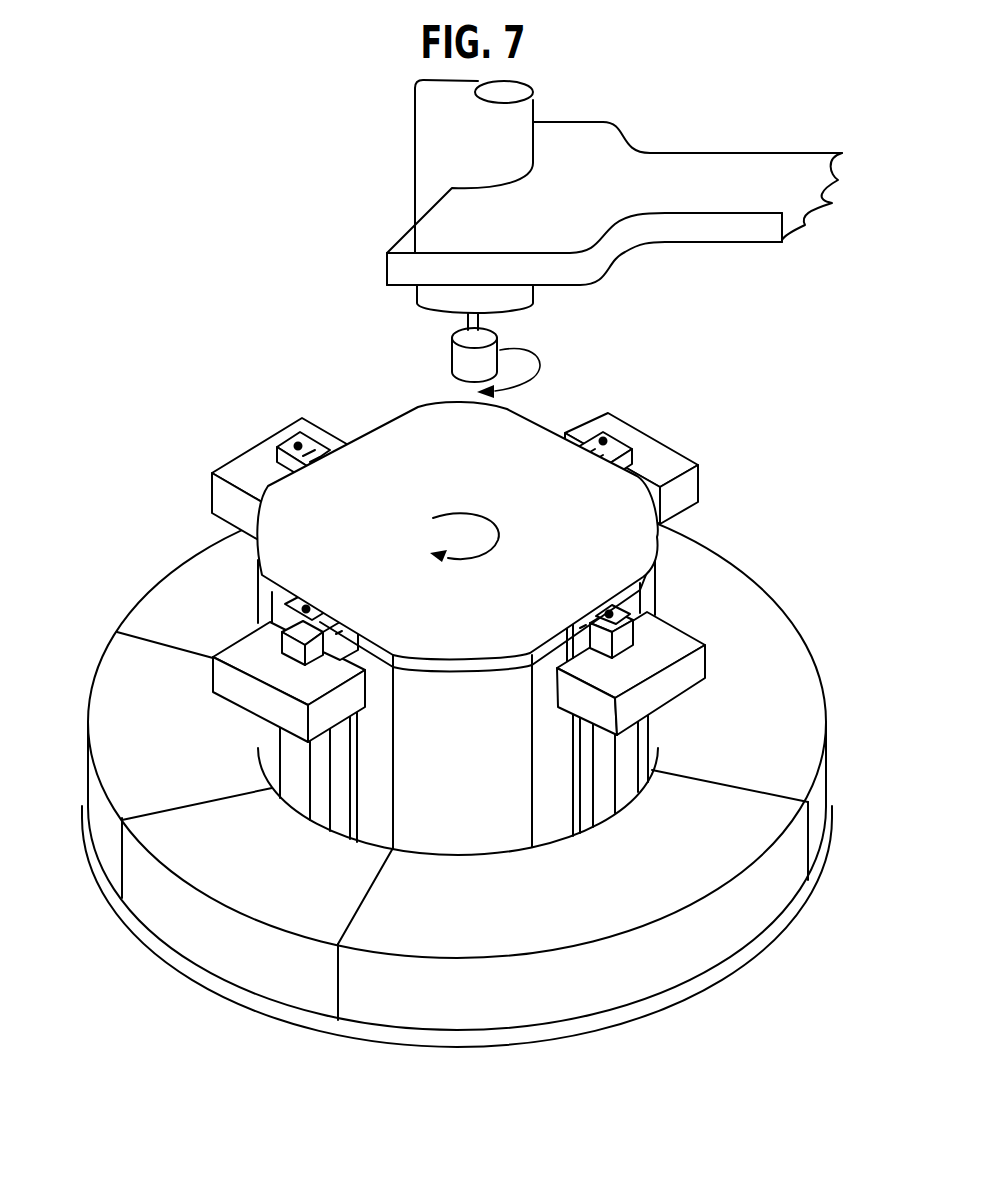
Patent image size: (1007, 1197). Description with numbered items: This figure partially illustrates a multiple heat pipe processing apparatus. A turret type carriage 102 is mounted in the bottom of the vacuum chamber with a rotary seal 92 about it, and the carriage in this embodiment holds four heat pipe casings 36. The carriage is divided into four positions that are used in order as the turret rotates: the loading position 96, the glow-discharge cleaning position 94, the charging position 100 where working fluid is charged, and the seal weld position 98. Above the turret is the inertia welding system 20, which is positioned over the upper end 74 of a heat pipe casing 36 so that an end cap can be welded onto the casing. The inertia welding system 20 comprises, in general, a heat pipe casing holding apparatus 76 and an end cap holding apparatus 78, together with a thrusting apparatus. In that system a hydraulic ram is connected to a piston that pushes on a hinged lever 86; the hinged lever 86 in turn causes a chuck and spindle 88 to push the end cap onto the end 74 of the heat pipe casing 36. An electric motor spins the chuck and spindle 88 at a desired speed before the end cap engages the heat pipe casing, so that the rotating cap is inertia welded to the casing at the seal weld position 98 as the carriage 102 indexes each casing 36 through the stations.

The inertia welding system 20 is at (597, 220).
The hinged lever 86 is at (740, 150).
The chuck and spindle 88 is at (413, 133).
The end cap holding apparatus 78 is at (452, 365).
The charging position 100 is at (226, 442).
The seal weld position 98 is at (662, 426).
The upper end of the heat pipe casing 74 is at (633, 612).
The heat pipe casing holding apparatus 76 is at (722, 670).
The heat pipe casing 36 is at (640, 744).
The turret type carriage 102 is at (86, 812).
The rotary seal 92 is at (788, 938).
The glow-discharge cleaning position 94 is at (145, 975).
The loading position 96 is at (717, 1003).